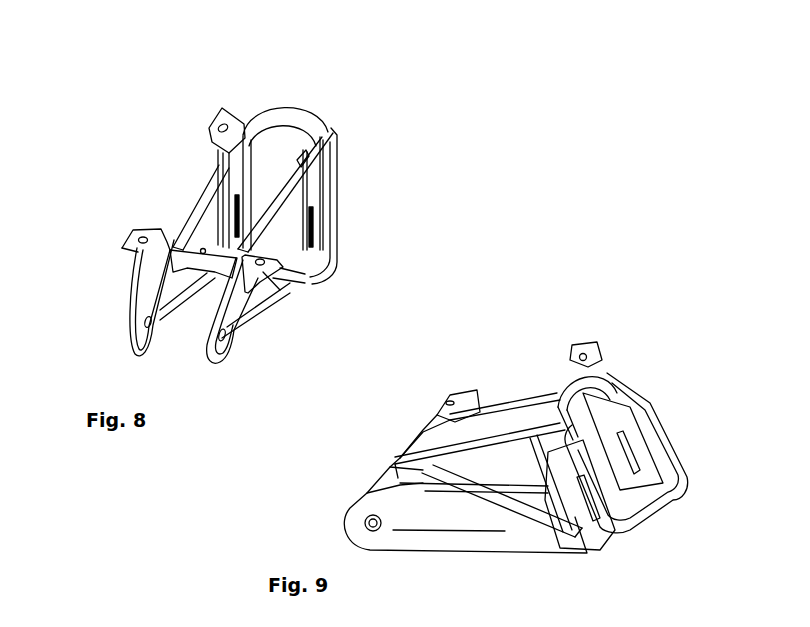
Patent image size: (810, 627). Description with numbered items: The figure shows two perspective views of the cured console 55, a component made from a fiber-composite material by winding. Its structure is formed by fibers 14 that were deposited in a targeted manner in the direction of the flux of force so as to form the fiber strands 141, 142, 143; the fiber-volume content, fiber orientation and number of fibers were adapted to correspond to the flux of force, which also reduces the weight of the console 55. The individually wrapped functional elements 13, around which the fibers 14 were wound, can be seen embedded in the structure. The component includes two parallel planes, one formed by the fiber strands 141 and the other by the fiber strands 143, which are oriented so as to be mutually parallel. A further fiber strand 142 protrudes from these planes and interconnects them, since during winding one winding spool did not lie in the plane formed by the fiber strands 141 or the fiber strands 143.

In FIG. 8, the functional elements 13 is at (230, 343).
In FIG. 9, the functional elements 13 is at (465, 405).
In FIG. 8, the fibers 14 is at (208, 182).
In FIG. 9, the fibers 14 is at (465, 484).
In FIG. 8, the console 55 is at (337, 155).
In FIG. 9, the console 55 is at (643, 385).
In FIG. 8, the fiber strands 141 is at (275, 212).
In FIG. 9, the fiber strands 141 is at (512, 517).
In FIG. 8, the fiber strand 142 is at (272, 122).
In FIG. 9, the fiber strand 142 is at (580, 378).
In FIG. 8, the fiber strands 143 is at (197, 205).
In FIG. 9, the fiber strands 143 is at (488, 410).